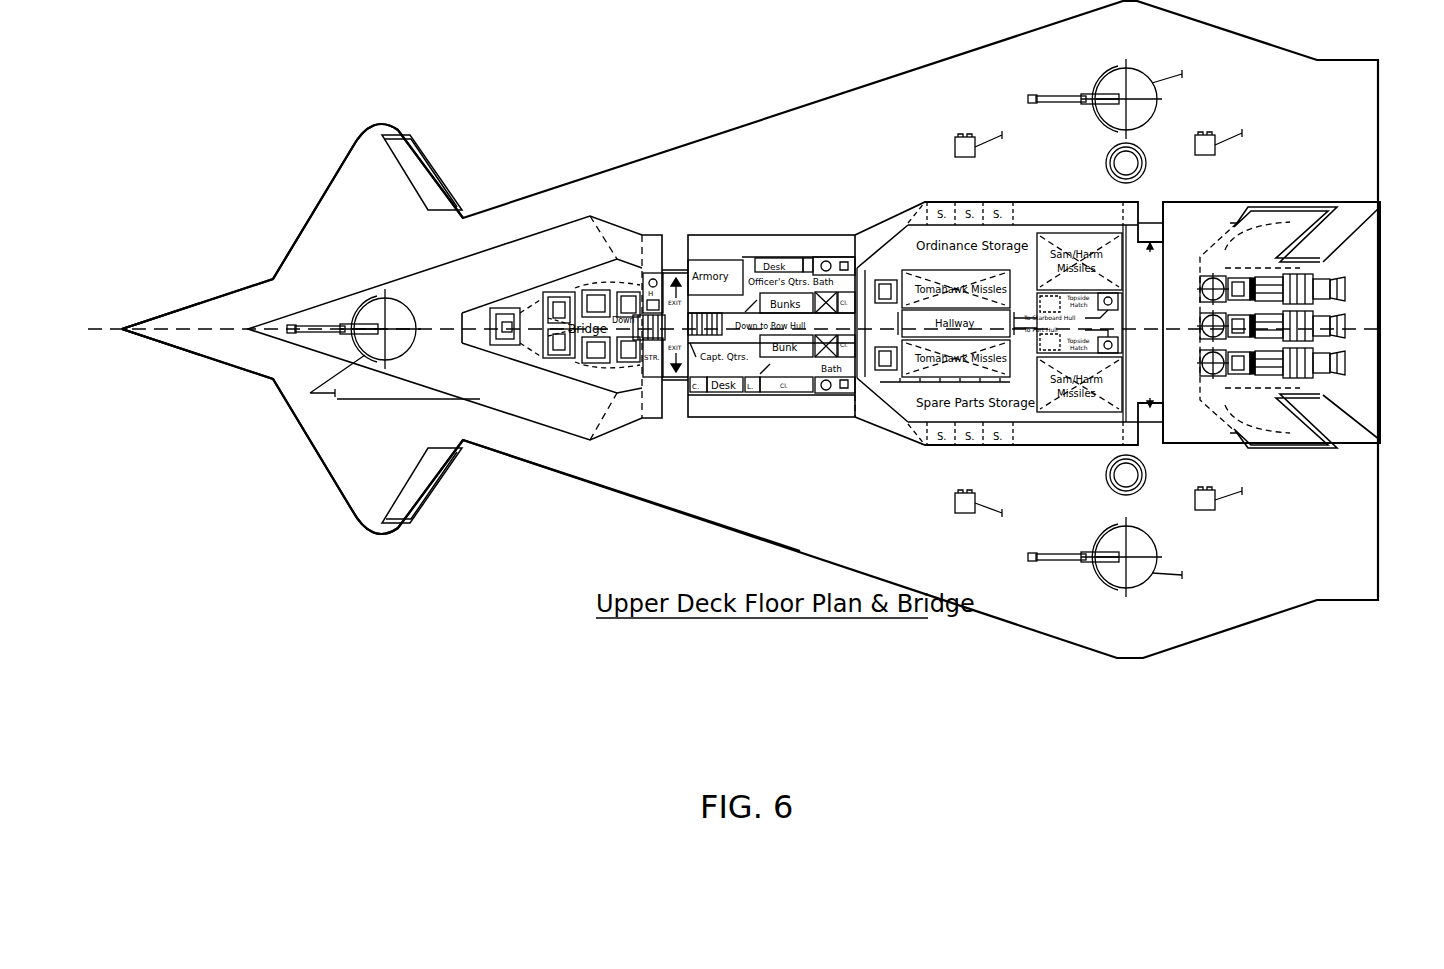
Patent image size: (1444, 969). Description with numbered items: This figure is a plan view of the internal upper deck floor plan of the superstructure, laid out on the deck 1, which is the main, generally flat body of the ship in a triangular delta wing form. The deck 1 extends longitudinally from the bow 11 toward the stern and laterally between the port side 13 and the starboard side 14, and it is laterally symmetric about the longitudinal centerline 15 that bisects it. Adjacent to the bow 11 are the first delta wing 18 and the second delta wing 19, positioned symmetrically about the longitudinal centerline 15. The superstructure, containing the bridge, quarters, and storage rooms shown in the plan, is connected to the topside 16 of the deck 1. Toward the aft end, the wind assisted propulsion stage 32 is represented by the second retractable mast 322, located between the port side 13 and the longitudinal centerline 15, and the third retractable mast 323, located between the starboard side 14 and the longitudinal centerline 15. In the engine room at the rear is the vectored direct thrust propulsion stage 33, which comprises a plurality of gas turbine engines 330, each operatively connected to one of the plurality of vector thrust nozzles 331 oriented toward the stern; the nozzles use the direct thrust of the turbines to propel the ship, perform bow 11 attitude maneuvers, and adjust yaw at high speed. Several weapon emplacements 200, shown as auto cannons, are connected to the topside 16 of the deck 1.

The deck 1 is at (808, 178).
The bow 11 is at (108, 292).
The port side 13 is at (1010, 636).
The starboard side 14 is at (797, 83).
The longitudinal centerline 15 is at (107, 340).
The topside 16 is at (668, 470).
The first delta wing 18 is at (335, 467).
The second delta wing 19 is at (335, 202).
The wind assisted propulsion stage 32 is at (1104, 191).
The vectored direct thrust propulsion stage 33 is at (1178, 267).
The weapon emplacements 200 is at (1088, 78).
The second retractable mast 322 is at (1147, 474).
The third retractable mast 323 is at (1140, 151).
The gas turbine engines 330 is at (1203, 287).
The vector thrust nozzles 331 is at (1340, 273).